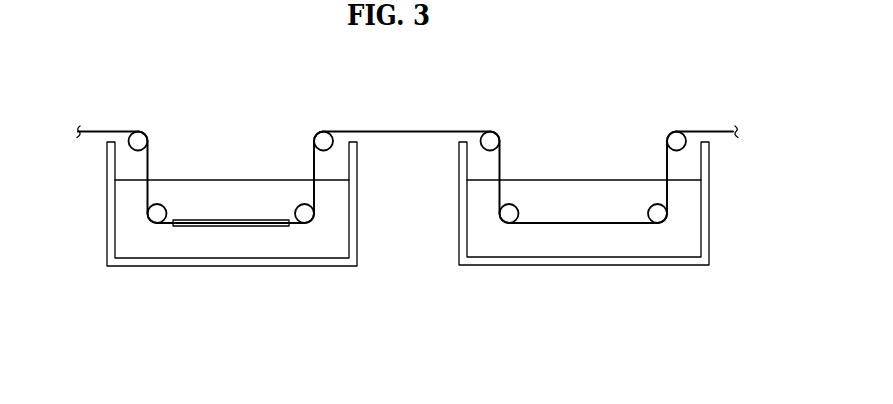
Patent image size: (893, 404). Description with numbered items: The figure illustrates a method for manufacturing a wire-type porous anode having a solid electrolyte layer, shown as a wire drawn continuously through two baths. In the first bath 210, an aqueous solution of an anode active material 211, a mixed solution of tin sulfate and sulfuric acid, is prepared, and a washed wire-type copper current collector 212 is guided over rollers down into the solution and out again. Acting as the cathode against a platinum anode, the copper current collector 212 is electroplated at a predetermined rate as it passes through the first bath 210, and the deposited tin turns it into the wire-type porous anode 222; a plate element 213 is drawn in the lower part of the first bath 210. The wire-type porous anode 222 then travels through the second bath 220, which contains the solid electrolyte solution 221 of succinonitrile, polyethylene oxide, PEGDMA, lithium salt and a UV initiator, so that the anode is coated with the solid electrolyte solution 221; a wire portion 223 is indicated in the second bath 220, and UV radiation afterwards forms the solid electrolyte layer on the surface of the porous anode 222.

The first bath 210 is at (201, 222).
The aqueous solution of an anode active material 211 is at (128, 223).
The wire-type copper current collector 212 is at (97, 131).
The electrode plate 213 is at (228, 219).
The second bath 220 is at (553, 221).
The solid electrolyte solution 221 is at (481, 222).
The wire-type porous anode 222 is at (475, 131).
The film 223 is at (580, 219).